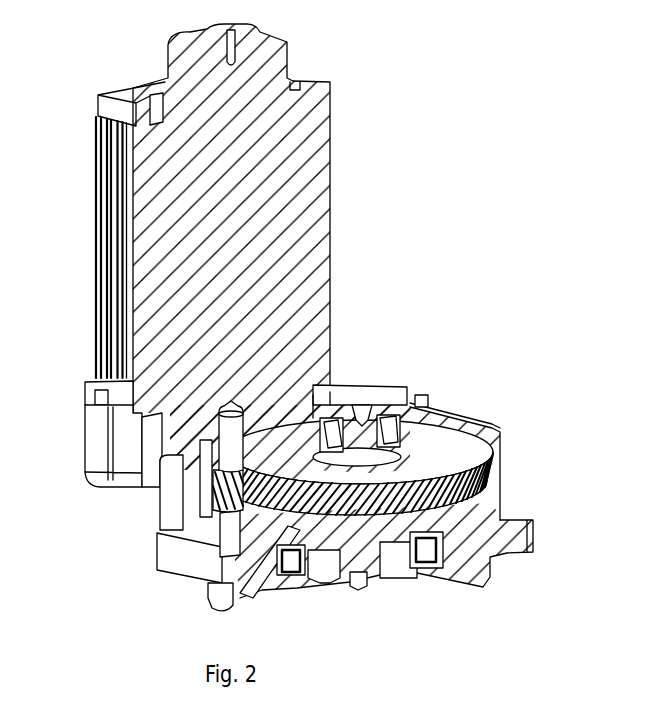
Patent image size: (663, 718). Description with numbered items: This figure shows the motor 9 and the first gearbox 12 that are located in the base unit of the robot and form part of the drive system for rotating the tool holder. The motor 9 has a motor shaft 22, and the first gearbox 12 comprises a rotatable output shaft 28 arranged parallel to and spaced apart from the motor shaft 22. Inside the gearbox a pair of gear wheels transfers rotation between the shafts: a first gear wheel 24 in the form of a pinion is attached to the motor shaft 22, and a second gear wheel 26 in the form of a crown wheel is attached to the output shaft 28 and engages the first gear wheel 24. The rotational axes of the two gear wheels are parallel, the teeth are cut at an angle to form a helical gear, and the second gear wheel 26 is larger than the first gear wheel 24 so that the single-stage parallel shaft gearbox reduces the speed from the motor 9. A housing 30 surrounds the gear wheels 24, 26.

The motor 9 is at (286, 195).
The first gearbox 12 is at (375, 365).
The motor shaft 22 is at (230, 440).
The first gear wheel 24 is at (223, 493).
The second gear wheel 26 is at (473, 463).
The output shaft 28 is at (367, 433).
The housing 30 is at (494, 440).